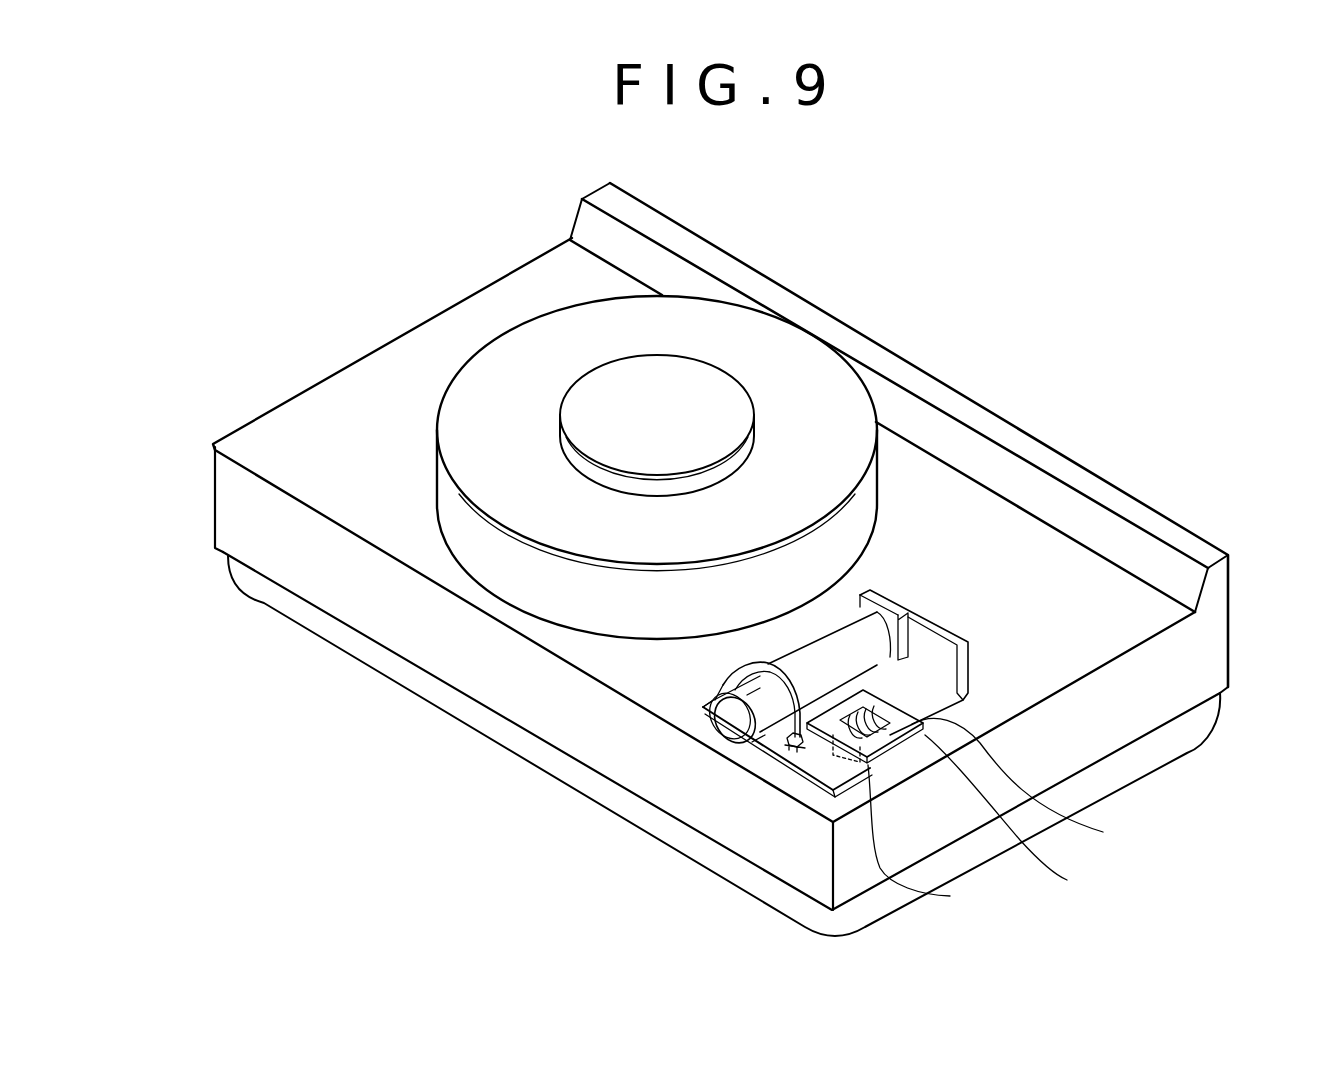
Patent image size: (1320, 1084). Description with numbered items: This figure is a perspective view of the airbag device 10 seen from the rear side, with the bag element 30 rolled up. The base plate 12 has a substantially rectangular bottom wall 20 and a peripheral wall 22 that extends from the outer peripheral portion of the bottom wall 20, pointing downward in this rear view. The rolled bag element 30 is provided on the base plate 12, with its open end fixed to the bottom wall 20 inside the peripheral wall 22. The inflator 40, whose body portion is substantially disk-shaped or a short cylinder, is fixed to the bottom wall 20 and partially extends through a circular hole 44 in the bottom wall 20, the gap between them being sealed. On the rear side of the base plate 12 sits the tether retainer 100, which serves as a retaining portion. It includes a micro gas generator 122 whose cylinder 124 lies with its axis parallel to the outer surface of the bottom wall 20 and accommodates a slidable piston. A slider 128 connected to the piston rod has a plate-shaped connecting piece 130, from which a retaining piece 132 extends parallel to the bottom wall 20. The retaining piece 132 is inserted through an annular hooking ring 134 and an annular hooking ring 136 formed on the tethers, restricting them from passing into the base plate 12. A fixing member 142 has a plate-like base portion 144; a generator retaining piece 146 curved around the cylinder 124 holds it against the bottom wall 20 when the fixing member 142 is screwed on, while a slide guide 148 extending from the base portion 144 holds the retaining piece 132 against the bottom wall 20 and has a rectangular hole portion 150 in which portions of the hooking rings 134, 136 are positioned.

The airbag device 10 is at (968, 335).
The base plate 12 is at (397, 366).
The bottom wall 20 is at (313, 403).
The peripheral wall 22 is at (228, 505).
The bag element 30 is at (350, 644).
The inflator 40 is at (540, 337).
The circular hole 44 is at (620, 636).
The tether retainer 100 is at (1018, 640).
The micro gas generator 122 is at (847, 611).
The cylinder 124 is at (733, 733).
The slider 128 is at (968, 622).
The connecting piece 130 is at (893, 722).
The retaining piece 132 is at (964, 700).
The annular hooking ring 134 is at (883, 713).
The annular hooking ring 136 is at (1024, 816).
The fixing member 142 is at (796, 773).
The base portion 144 is at (937, 841).
The generator retaining piece 146 is at (713, 672).
The slide guide 148 is at (1037, 784).
The hole portion 150 is at (860, 725).